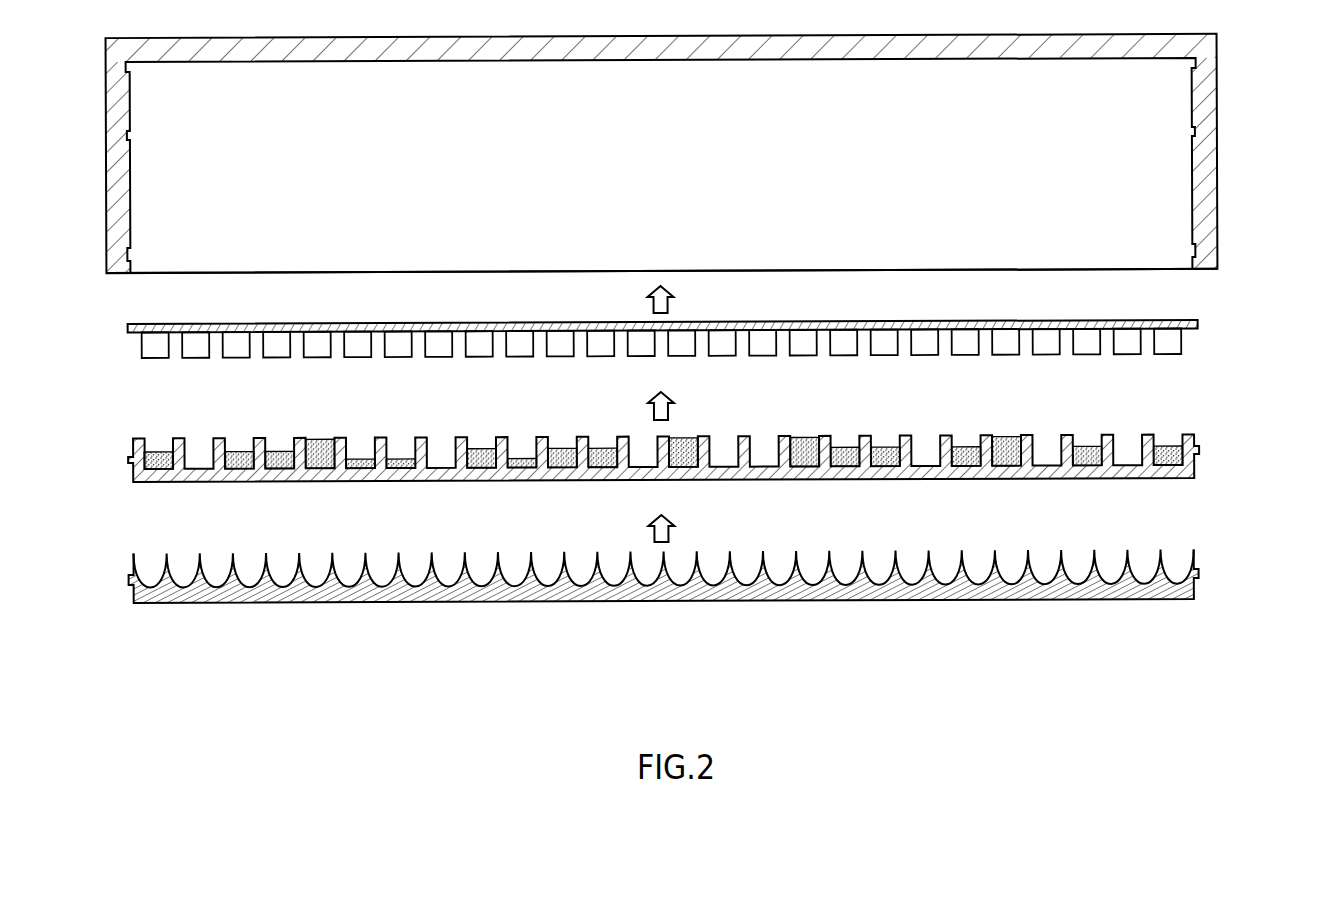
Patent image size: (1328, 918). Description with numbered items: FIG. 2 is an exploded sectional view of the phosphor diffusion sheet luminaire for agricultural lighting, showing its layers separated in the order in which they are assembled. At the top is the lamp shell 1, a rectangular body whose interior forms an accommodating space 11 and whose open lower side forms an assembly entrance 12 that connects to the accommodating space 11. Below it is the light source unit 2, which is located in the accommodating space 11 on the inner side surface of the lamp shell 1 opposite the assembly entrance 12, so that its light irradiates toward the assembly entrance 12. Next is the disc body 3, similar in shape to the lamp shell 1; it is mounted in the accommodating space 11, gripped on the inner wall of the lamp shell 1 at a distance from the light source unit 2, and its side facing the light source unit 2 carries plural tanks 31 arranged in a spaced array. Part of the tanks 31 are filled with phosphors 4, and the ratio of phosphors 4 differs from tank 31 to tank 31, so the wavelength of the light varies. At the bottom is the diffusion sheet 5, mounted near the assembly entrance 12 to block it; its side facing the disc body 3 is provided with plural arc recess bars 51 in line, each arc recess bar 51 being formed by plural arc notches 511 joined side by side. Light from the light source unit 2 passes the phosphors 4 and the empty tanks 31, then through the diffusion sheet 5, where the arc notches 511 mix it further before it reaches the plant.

The lamp shell 1 is at (706, 161).
The accommodating space 11 is at (1147, 205).
The assembly entrance 12 is at (1163, 271).
The light source unit 2 is at (1187, 343).
The disc body 3 is at (702, 431).
The tanks 31 is at (1127, 455).
The phosphors 4 is at (1167, 452).
The diffusion sheet 5 is at (716, 620).
The arc recess bars 51 is at (1170, 600).
The arc notches 511 is at (1178, 568).